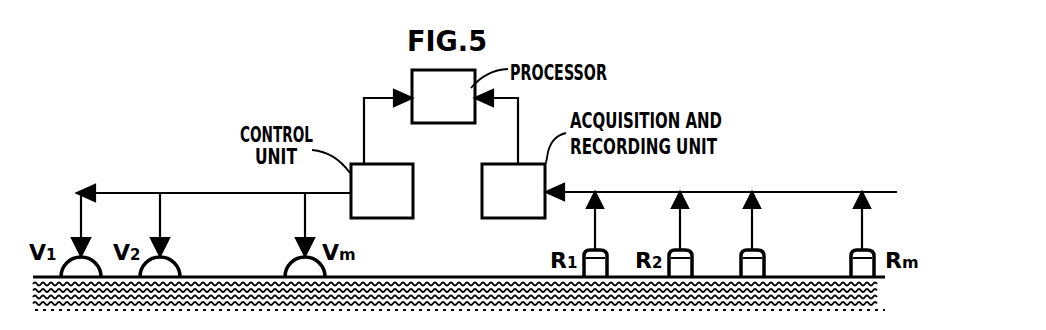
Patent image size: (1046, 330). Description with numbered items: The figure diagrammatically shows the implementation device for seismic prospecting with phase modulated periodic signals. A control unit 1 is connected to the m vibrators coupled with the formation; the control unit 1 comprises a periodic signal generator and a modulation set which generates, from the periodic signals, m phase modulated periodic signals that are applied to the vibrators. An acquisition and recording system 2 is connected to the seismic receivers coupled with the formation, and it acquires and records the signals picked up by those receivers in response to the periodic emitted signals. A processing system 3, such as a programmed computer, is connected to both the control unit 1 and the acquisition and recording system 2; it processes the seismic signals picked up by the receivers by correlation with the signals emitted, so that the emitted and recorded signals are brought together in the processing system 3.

The control unit 1 is at (390, 204).
The acquisition and recording system 2 is at (522, 204).
The processing system 3 is at (451, 109).